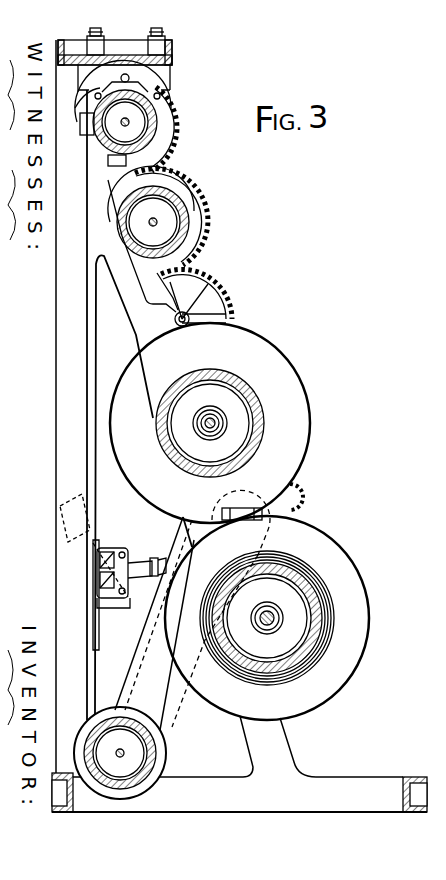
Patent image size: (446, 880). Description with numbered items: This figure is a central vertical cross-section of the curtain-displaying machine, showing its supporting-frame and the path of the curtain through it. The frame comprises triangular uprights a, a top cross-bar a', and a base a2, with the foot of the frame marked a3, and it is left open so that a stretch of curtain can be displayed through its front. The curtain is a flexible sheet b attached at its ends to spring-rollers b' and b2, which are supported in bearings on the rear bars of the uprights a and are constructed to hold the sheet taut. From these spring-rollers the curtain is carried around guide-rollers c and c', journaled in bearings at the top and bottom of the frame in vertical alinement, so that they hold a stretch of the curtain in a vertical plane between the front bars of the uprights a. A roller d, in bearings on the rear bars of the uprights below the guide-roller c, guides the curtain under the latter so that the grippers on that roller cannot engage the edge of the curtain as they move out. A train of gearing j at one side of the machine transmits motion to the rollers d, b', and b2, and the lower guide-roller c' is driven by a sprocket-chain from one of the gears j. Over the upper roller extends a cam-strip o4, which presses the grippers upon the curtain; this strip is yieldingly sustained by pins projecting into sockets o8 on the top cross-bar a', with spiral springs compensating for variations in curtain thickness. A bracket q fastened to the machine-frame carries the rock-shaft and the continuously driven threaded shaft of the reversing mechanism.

The triangular uprights a is at (229, 426).
The top cross-bar a' is at (134, 64).
The base a2 is at (412, 781).
The left foot of frame base a3 is at (56, 806).
The sheet b is at (116, 374).
The spring-roller b' is at (211, 423).
The spring-roller b2 is at (278, 618).
The guide-roller c is at (116, 126).
The guide-roller c' is at (120, 740).
The roller d is at (193, 207).
The train of gearing j is at (226, 298).
The belt o is at (199, 639).
The cam-strip o4 is at (80, 113).
The sockets o8 is at (163, 42).
The bracket q is at (114, 548).